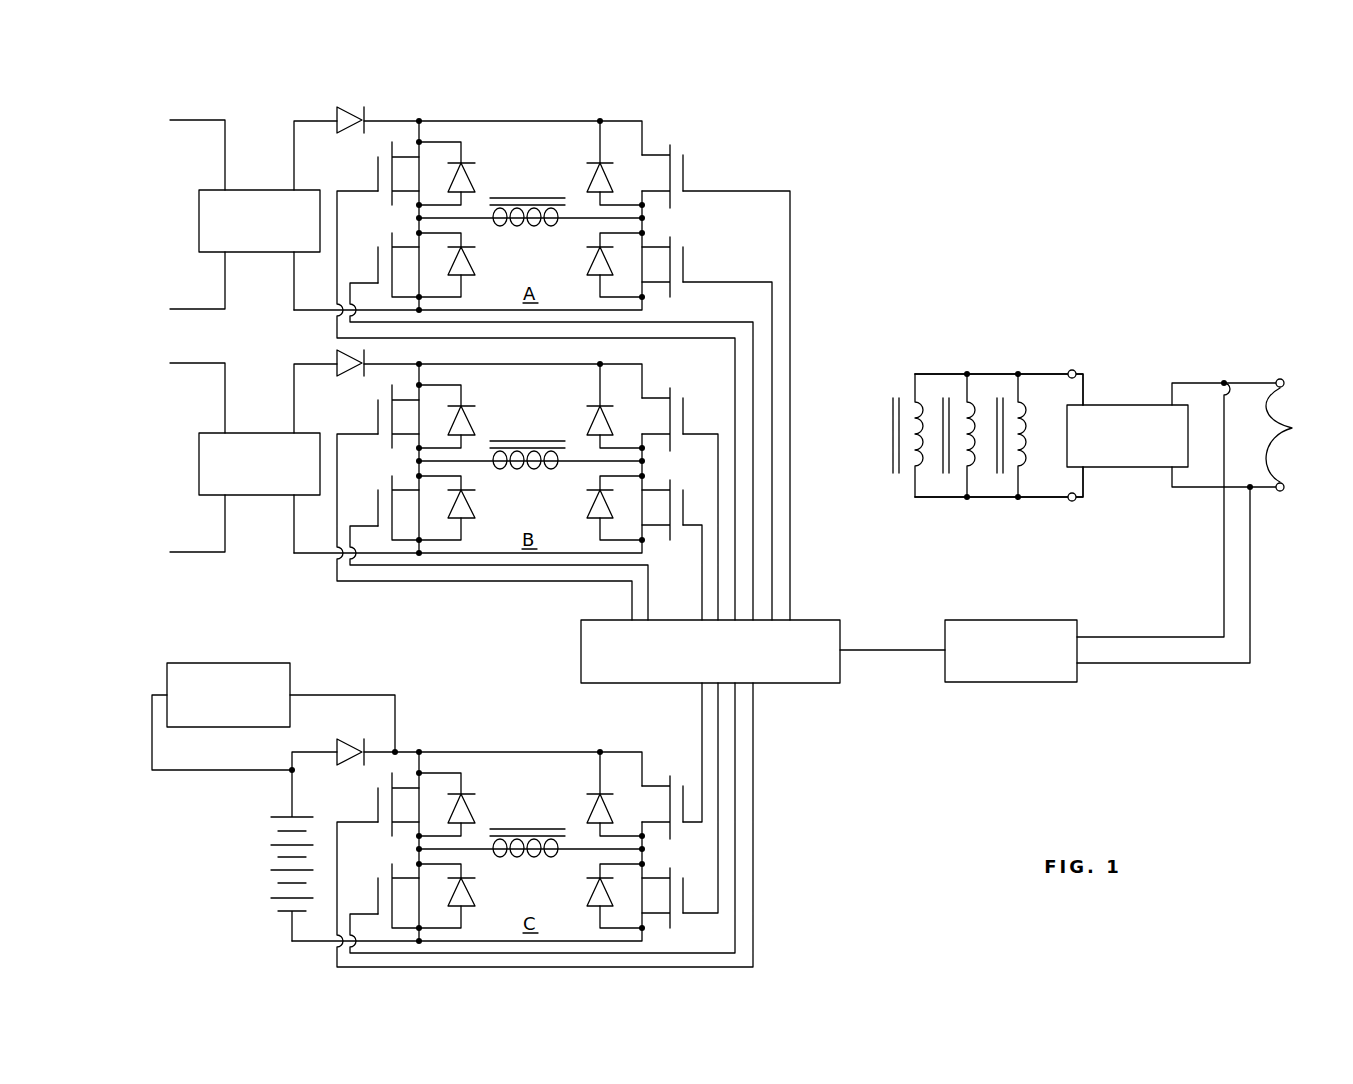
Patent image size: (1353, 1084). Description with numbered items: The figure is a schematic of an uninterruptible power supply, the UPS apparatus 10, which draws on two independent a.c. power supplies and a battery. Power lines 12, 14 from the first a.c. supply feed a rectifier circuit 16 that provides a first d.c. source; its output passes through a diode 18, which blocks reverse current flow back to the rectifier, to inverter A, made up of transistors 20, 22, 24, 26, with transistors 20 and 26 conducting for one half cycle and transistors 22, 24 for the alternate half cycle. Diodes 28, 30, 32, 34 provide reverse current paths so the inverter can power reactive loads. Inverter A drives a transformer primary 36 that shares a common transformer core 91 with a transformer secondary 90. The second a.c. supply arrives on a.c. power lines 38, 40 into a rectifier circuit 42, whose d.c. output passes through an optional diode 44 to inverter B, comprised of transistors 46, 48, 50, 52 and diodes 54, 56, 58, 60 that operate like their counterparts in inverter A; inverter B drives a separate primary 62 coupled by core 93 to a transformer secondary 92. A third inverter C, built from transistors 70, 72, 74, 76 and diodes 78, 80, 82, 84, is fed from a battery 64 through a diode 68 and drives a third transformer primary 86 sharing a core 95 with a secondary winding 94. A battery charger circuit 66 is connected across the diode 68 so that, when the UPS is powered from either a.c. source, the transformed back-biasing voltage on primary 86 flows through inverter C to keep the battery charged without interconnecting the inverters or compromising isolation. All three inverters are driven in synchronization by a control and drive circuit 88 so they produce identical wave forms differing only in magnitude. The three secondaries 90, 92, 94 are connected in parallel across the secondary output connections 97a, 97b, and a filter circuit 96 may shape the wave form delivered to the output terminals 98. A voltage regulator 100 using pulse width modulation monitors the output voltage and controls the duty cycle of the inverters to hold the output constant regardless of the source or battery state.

The UPS apparatus 10 is at (893, 256).
The power line 12 is at (207, 118).
The power line 14 is at (201, 308).
The rectifier circuit 16 is at (278, 190).
The diode 18 is at (356, 108).
The transistor 20 is at (385, 149).
The transistor 22 is at (387, 240).
The transistor 24 is at (672, 152).
The transistor 26 is at (672, 243).
The diode 28 is at (473, 178).
The diode 30 is at (473, 275).
The diode 32 is at (593, 180).
The diode 34 is at (588, 273).
The transformer primary 36 is at (545, 228).
The a.c. power line 38 is at (207, 361).
The a.c. power line 40 is at (201, 551).
The rectifier circuit 42 is at (278, 433).
The diode 44 is at (357, 351).
The transistor 46 is at (385, 392).
The transistor 48 is at (387, 483).
The transistor 50 is at (668, 392).
The transistor 52 is at (672, 483).
The diode 54 is at (473, 421).
The diode 56 is at (476, 520).
The diode 58 is at (590, 422).
The diode 60 is at (587, 517).
The primary 62 is at (545, 471).
The battery 64 is at (273, 868).
The battery charger circuit 66 is at (213, 663).
The diode 68 is at (353, 738).
The transistor 70 is at (385, 779).
The transistor 72 is at (387, 871).
The transistor 74 is at (668, 777).
The transistor 76 is at (670, 872).
The diode 78 is at (473, 809).
The diode 80 is at (473, 906).
The diode 82 is at (593, 811).
The diode 84 is at (588, 904).
The transformer primary 86 is at (545, 859).
The control and drive circuit 88 is at (572, 652).
The transformer secondary 90 is at (912, 398).
The transformer core 91 is at (548, 198).
The transformer secondary 92 is at (958, 397).
The transformer core 93 is at (548, 441).
The transformer secondary winding 94 is at (1010, 400).
The transformer core 95 is at (548, 829).
The filter circuit 96 is at (1140, 405).
The secondary output connection 97a is at (1072, 370).
The secondary output connection 97b is at (1072, 501).
The output terminals 98 is at (1292, 428).
The voltage regulator 100 is at (1044, 694).